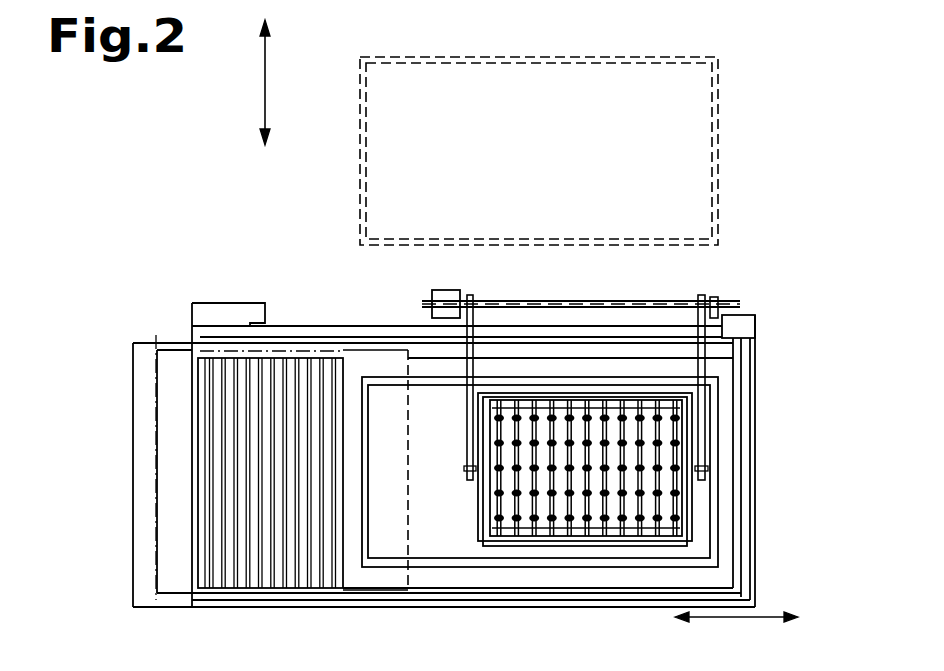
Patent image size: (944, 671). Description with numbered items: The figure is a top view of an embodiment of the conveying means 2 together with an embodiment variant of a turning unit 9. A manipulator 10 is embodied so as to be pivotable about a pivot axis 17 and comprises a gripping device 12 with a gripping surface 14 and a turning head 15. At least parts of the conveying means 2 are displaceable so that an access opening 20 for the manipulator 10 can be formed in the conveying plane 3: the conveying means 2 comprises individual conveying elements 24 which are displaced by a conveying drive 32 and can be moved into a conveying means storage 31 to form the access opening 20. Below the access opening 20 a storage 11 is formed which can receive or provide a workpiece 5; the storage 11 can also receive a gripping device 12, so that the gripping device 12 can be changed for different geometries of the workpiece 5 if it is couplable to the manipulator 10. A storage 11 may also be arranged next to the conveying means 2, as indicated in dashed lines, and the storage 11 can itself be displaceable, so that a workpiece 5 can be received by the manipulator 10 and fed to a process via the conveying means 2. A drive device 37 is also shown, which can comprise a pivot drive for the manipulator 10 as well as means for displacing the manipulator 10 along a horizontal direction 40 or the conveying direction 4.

The conveying means 2 is at (254, 262).
The conveying plane 3 is at (174, 383).
The conveying direction 4 is at (729, 628).
The workpiece 5 is at (683, 530).
The turning unit 9 is at (750, 273).
The manipulator 10 is at (710, 347).
The storage 11 is at (743, 83).
The gripping device 12 is at (678, 500).
The gripping surface 14 is at (678, 413).
The turning head 15 is at (697, 467).
The pivot axis 17 is at (728, 305).
The access opening 20 is at (363, 358).
The conveying elements 24 is at (335, 558).
The conveying means storage 31 is at (148, 412).
The conveying drive 32 is at (212, 313).
The drive device 37 is at (434, 293).
The horizontal direction 40 is at (256, 83).